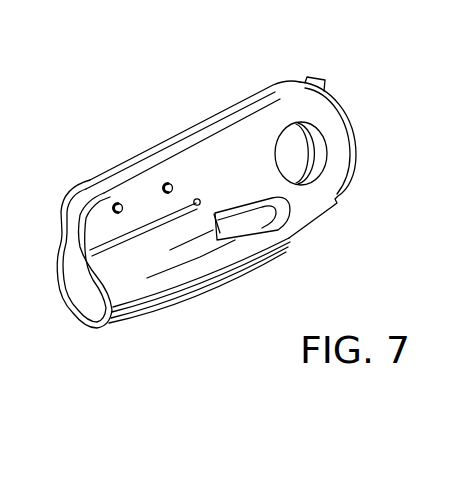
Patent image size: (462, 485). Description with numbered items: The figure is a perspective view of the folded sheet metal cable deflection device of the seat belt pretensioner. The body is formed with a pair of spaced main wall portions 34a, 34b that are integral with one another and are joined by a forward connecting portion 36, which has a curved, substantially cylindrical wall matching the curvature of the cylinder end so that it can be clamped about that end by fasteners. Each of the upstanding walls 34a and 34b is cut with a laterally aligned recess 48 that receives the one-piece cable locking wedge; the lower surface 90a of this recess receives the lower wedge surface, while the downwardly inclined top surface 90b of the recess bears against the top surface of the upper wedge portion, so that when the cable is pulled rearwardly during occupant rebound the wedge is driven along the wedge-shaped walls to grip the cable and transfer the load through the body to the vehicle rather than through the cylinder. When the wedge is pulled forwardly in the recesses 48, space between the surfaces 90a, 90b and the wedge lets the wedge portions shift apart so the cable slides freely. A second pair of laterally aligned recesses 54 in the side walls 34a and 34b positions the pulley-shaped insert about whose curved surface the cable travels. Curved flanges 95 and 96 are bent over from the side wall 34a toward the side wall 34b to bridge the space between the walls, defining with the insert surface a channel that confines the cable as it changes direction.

The main wall portion 34a is at (107, 173).
The main wall portion 34b is at (178, 150).
The forward connecting portion 36 is at (104, 285).
The recess 48 is at (217, 216).
The recess 54 is at (312, 150).
The lower surface 90a is at (292, 240).
The inclined top surface 90b is at (225, 206).
The curved flange 95 is at (343, 102).
The curved flange 96 is at (353, 175).